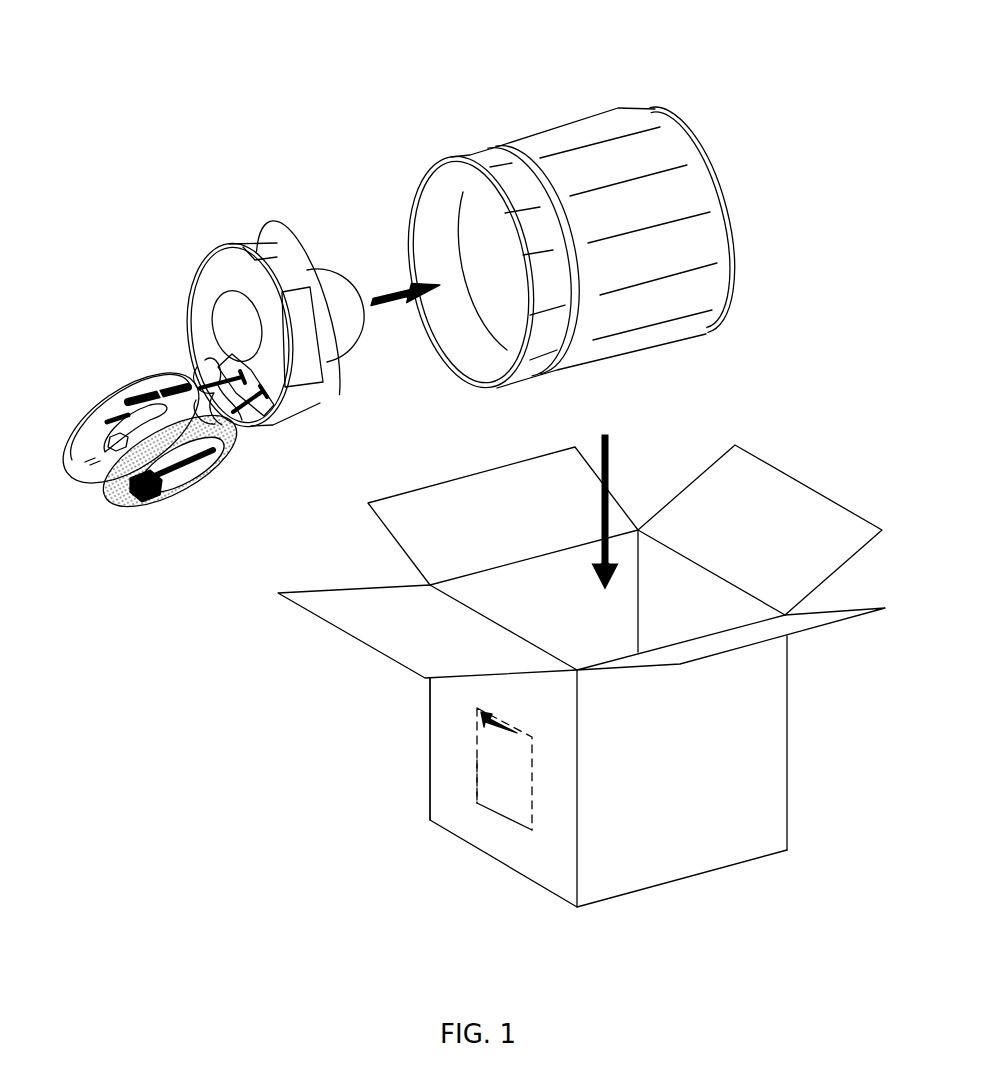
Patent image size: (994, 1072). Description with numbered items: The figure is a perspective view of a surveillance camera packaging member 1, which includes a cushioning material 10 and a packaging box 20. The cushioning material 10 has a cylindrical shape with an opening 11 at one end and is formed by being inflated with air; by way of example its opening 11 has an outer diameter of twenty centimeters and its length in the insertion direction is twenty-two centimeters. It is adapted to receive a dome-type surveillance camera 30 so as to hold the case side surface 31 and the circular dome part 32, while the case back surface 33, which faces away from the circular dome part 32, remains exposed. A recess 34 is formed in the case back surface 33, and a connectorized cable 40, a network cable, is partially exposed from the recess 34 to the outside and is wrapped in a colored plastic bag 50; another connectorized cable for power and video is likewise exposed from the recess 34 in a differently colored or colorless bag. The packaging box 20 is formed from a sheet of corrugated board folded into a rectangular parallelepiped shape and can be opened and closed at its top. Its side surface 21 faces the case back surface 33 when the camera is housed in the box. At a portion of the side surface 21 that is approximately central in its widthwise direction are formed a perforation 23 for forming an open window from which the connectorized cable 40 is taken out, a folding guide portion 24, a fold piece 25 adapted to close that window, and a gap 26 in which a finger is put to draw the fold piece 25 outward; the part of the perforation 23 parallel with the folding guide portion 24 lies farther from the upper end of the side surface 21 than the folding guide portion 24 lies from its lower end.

The surveillance camera packaging member 1 is at (476, 63).
The cushioning material 10 is at (622, 105).
The opening 11 is at (447, 210).
The packaging box 20 is at (738, 865).
The side surface 21 is at (520, 855).
The perforation 23 is at (475, 783).
The folding guide portion 24 is at (487, 812).
The fold piece 25 is at (484, 745).
The gap 26 is at (478, 726).
The dome-type surveillance camera 30 is at (219, 233).
The case side surface 31 is at (287, 261).
The circular dome part 32 is at (341, 292).
The case back surface 33 is at (216, 283).
The recess 34 is at (273, 423).
The connectorized cable 40 is at (190, 483).
The colored plastic bag 50 is at (105, 490).